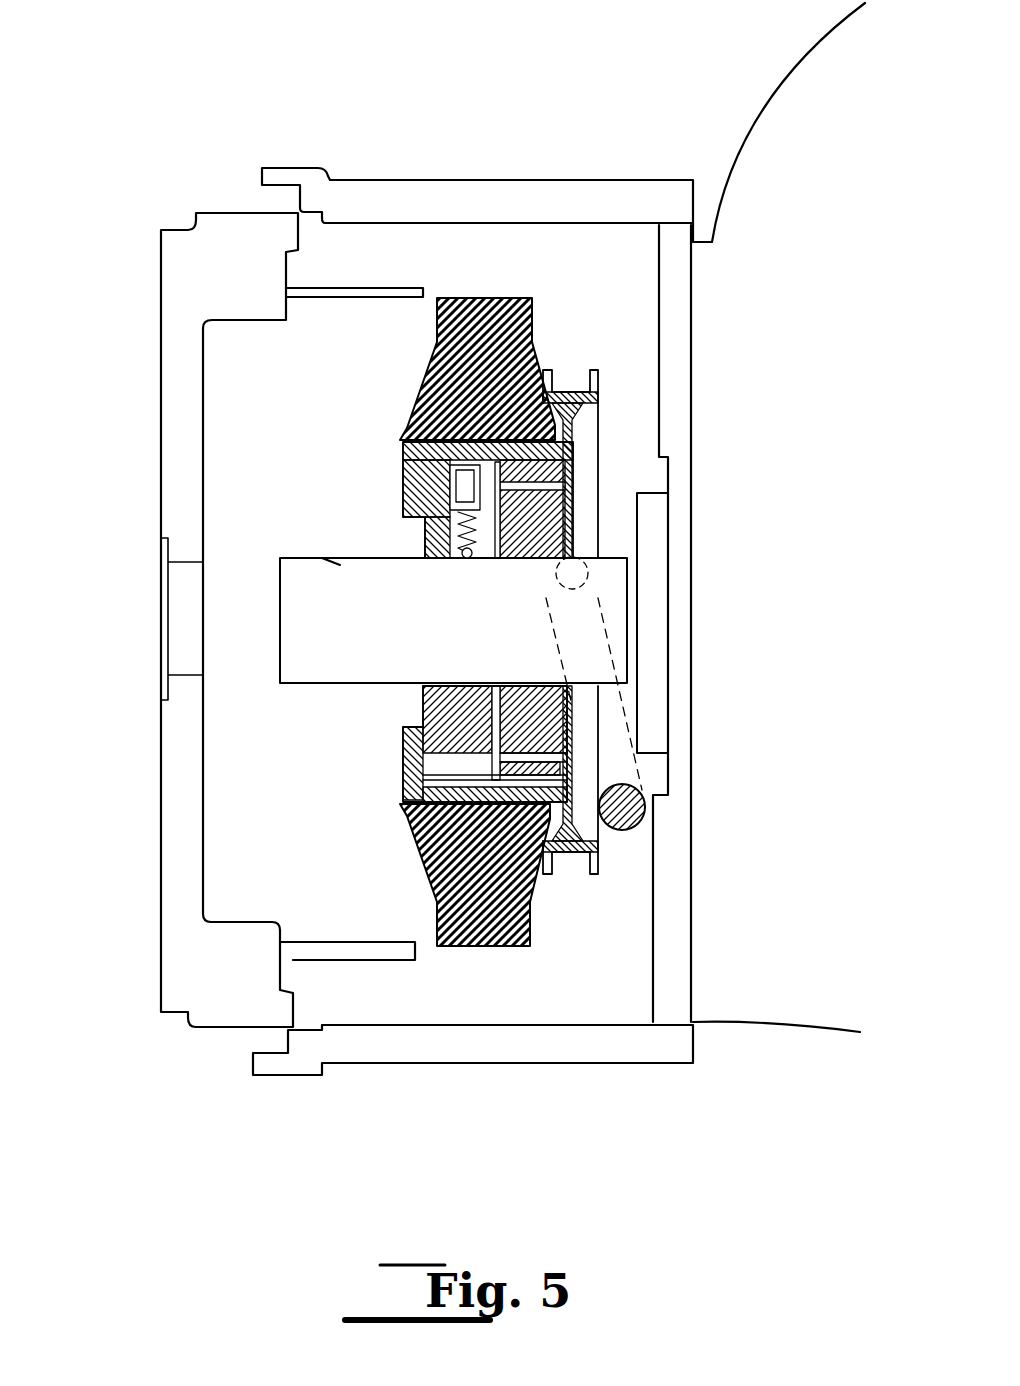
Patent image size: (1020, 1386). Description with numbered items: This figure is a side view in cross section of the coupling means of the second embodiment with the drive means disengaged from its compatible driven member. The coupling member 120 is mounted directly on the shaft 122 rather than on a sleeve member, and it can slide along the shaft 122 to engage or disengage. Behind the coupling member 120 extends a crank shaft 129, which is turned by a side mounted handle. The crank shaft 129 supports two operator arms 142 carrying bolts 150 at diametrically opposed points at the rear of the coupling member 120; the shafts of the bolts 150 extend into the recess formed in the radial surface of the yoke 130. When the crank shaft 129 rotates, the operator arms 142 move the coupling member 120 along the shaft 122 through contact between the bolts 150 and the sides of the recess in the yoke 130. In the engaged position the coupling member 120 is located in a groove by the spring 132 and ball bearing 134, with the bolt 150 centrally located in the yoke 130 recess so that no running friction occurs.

The coupling member 120 is at (532, 318).
The shaft 122 is at (335, 612).
The crank shaft 129 is at (645, 808).
The yoke 130 is at (598, 382).
The spring 132 is at (470, 548).
The ball bearing 134 is at (465, 560).
The operator arms 142 is at (608, 722).
The bolts 150 is at (563, 577).